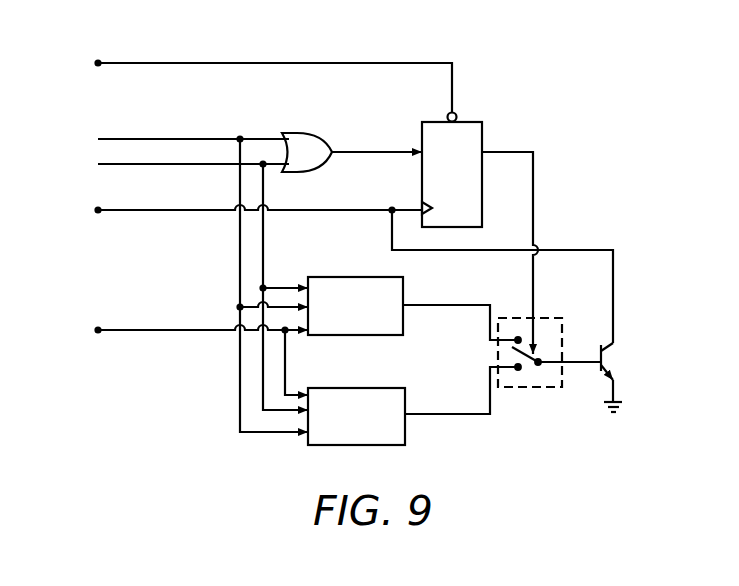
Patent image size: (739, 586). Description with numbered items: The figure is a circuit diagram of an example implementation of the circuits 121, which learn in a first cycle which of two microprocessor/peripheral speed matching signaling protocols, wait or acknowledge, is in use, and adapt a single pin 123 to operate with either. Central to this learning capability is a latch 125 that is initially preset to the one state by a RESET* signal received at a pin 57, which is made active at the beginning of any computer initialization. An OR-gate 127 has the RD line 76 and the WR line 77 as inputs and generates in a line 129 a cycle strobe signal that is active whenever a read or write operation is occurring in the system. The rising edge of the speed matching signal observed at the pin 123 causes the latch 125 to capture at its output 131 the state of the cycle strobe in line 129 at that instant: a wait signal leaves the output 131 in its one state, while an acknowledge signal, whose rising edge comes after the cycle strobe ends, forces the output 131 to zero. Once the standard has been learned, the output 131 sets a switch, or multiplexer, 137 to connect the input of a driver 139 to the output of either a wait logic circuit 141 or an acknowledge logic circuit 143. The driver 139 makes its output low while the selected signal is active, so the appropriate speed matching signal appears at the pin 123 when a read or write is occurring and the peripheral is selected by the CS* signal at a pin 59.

The pin 57 is at (98, 62).
The line 76 is at (172, 123).
The line 77 is at (172, 154).
The pin 123 is at (324, 262).
The pin 59 is at (171, 337).
The OR-gate 127 is at (297, 136).
The line 129 is at (376, 141).
The latch 125 is at (483, 128).
The output 131 is at (534, 196).
The circuits 121 is at (628, 96).
The switch (multiplexer) 137 is at (555, 345).
The driver 139 is at (574, 395).
The wait logic circuit 141 is at (405, 292).
The acknowledge logic circuit 143 is at (407, 390).